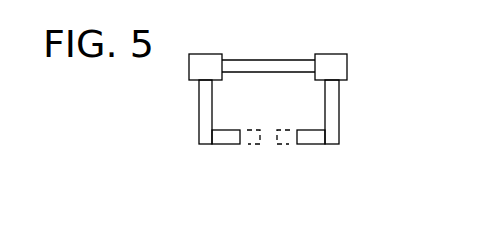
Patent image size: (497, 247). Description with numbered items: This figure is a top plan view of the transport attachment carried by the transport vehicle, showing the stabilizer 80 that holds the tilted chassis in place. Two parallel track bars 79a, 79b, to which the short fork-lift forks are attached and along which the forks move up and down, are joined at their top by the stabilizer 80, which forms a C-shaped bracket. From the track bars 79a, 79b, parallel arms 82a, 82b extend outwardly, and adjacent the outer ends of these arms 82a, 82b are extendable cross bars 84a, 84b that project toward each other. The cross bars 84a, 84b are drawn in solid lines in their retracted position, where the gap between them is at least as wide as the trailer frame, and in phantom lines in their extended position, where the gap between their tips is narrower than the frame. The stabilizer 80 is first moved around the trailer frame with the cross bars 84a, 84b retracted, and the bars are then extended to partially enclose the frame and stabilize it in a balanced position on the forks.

The stabilizer 80 is at (277, 103).
The track bar 79a is at (207, 60).
The track bar 79b is at (330, 60).
The arm 82a is at (199, 108).
The arm 82b is at (338, 107).
The cross bar 84a is at (255, 126).
The cross bar 84b is at (280, 126).